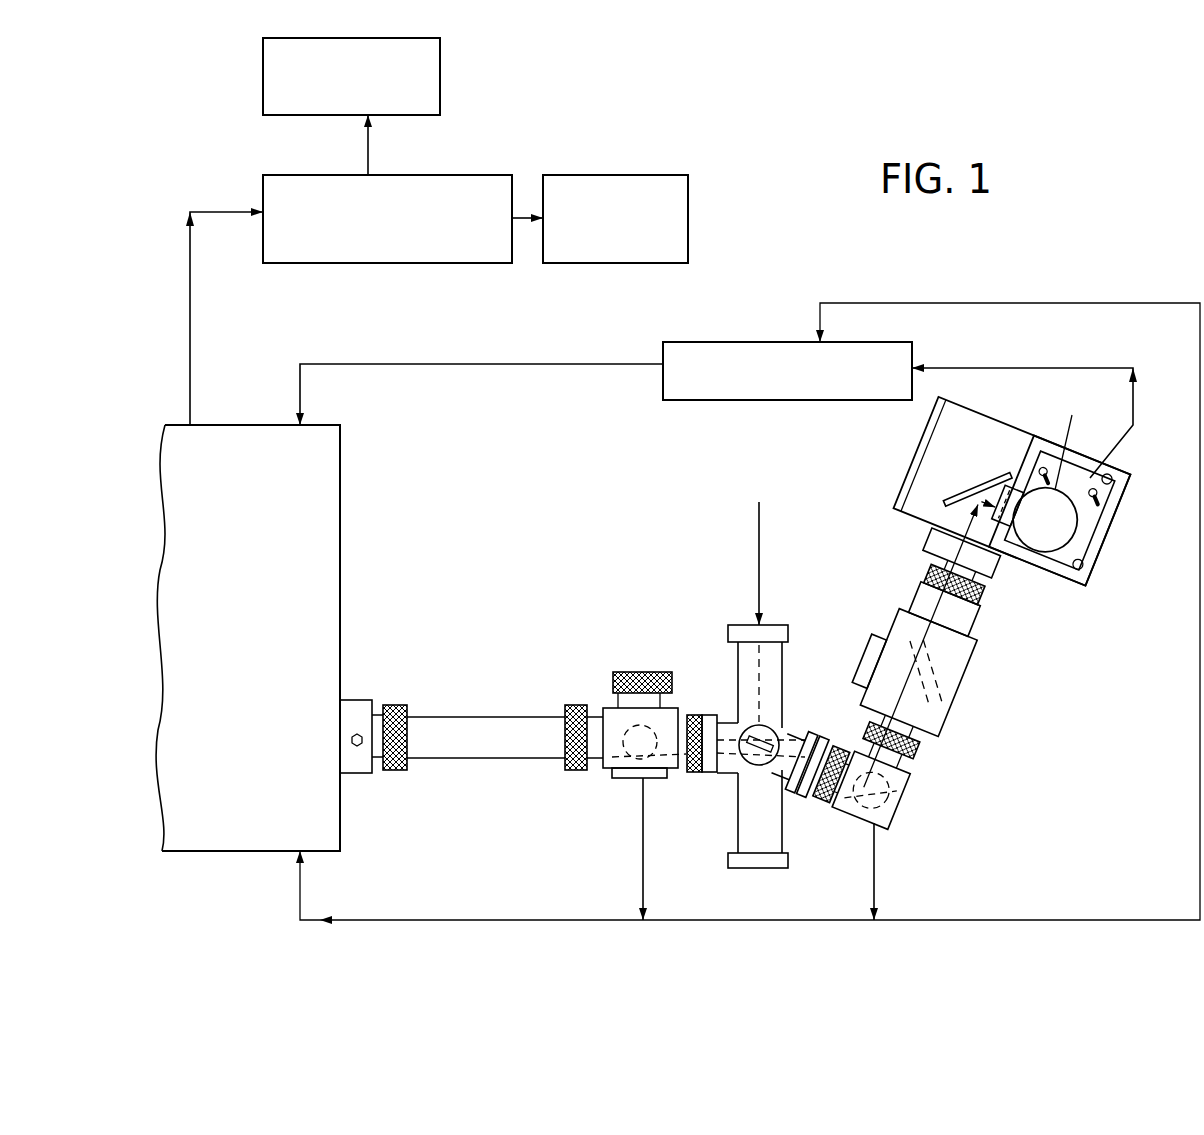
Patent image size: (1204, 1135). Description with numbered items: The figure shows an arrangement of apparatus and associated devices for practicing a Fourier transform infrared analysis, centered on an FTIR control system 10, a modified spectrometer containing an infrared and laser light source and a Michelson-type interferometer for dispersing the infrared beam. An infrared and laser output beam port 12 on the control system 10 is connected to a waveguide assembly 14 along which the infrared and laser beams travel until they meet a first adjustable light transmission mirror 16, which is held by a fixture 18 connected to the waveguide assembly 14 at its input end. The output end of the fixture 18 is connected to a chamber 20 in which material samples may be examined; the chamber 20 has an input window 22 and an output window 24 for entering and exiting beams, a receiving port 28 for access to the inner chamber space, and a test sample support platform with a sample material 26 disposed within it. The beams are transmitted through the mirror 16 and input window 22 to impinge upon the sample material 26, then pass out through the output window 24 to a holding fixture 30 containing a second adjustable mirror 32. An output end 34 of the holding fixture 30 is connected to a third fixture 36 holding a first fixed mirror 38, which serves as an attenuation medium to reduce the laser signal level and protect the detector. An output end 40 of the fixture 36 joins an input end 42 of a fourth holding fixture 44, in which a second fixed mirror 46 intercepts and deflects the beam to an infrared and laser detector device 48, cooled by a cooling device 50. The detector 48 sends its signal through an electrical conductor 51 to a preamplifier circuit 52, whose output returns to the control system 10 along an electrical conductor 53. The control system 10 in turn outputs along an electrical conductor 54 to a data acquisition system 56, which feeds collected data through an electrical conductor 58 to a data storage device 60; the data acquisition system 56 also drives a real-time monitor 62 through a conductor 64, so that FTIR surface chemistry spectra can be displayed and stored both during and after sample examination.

The FTIR control system 10 is at (341, 527).
The infrared and laser output beam port 12 is at (355, 773).
The waveguide assembly 14 is at (537, 760).
The first adjustable light transmission mirror 16 is at (623, 753).
The fixture 18 is at (658, 780).
The chamber 20 is at (790, 835).
The input window 22 is at (705, 715).
The output window 24 is at (800, 792).
The sample material 26 is at (772, 735).
The receiving port 28 is at (768, 625).
The holding fixture 30 is at (900, 800).
The second adjustable mirror 32 is at (897, 820).
The output end 34 is at (905, 745).
The third fixture 36 is at (955, 693).
The first fixed mirror 38 is at (866, 628).
The output end 40 is at (975, 597).
The input end 42 is at (988, 574).
The fourth holding fixture 44 is at (918, 528).
The second fixed mirror 46 is at (990, 480).
The infrared and laser detector device 48 is at (1078, 523).
The cooling device 50 is at (1068, 478).
The electrical conductor 51 is at (1068, 368).
The preamplifier circuit 52 is at (778, 342).
The electrical conductor 53 is at (568, 364).
The electrical conductor 54 is at (190, 308).
The data acquisition system 56 is at (413, 263).
The electrical conductor 58 is at (527, 215).
The data storage device 60 is at (660, 175).
The real-time monitor 62 is at (440, 88).
The data line to monitor 64 is at (366, 137).